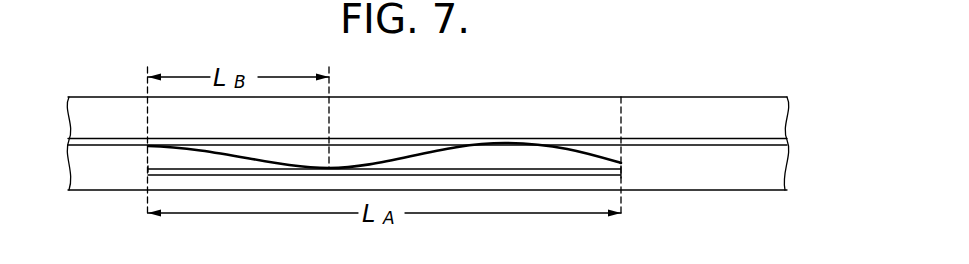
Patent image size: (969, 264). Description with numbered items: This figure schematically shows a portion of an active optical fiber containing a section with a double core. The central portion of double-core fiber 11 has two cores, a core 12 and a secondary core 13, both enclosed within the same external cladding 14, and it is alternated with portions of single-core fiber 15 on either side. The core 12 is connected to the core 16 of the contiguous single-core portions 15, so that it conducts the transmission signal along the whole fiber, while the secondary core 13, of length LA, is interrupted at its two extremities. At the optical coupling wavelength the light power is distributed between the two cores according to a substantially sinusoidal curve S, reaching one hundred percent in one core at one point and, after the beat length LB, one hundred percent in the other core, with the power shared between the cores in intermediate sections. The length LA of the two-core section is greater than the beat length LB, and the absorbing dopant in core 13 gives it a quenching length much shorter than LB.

The portion of double-core fiber 11 is at (489, 92).
The core 12 is at (530, 138).
The secondary core 13 is at (165, 177).
The external cladding 14 is at (412, 122).
The portion of single-core fiber 15 is at (724, 108).
The core of single-core fiber 16 is at (111, 138).
The sinusoidal curve S is at (266, 163).